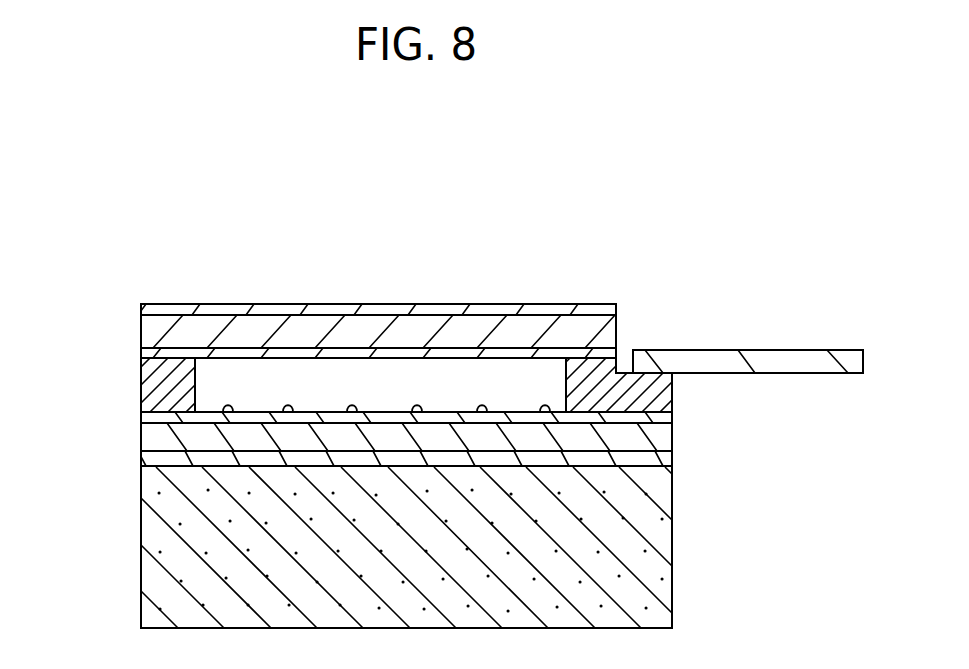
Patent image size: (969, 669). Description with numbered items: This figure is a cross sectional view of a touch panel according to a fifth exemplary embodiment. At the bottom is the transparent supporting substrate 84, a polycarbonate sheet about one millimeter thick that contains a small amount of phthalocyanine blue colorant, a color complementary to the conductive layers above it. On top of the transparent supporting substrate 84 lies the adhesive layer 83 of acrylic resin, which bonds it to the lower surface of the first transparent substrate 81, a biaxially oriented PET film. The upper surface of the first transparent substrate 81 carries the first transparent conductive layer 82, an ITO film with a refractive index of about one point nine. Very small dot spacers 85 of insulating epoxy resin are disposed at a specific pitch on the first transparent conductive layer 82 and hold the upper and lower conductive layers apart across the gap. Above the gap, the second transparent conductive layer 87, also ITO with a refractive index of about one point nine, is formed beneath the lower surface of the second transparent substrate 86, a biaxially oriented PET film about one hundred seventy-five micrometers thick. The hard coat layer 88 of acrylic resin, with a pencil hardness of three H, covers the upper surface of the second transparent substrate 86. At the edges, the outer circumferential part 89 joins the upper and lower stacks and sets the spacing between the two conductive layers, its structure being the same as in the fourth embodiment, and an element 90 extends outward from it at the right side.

The first transparent substrate 81 is at (152, 437).
The first transparent conductive layer 82 is at (143, 417).
The adhesive layer 83 is at (157, 462).
The transparent supporting substrate 84 is at (168, 517).
The dot spacers 85 is at (417, 406).
The second transparent substrate 86 is at (270, 327).
The second transparent conductive layer 87 is at (350, 348).
The hard coat layer 88 is at (190, 305).
The outer circumferential part 89 is at (147, 375).
The lead 90 is at (818, 364).